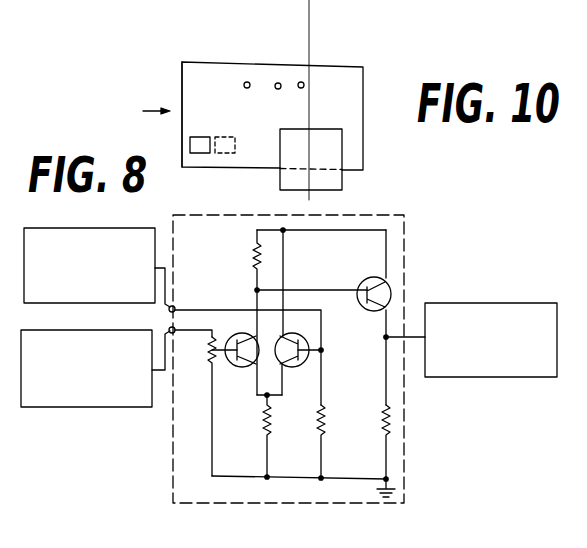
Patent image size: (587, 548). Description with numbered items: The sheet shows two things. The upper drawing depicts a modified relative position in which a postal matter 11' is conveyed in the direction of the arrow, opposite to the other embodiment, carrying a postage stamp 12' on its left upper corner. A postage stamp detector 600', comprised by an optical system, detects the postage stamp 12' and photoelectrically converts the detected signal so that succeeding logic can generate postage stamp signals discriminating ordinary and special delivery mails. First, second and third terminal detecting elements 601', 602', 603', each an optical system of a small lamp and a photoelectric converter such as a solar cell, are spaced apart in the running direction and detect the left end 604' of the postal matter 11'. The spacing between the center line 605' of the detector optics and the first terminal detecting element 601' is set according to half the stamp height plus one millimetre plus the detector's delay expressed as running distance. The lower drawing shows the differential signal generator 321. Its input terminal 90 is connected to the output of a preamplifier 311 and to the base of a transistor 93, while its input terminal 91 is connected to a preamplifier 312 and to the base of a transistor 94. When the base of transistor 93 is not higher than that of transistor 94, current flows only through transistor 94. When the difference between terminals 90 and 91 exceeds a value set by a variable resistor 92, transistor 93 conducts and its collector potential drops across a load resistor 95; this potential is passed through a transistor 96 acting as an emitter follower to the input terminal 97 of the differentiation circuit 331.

In FIG. 10, the postal matter 11' is at (296, 106).
In FIG. 10, the postage stamp 12' is at (212, 168).
In FIG. 10, the postage stamp detector 600' is at (348, 159).
In FIG. 10, the first terminal detecting element 601' is at (297, 49).
In FIG. 10, the second terminal detecting element 602' is at (281, 104).
In FIG. 10, the third terminal detecting element 603' is at (247, 58).
In FIG. 10, the left end 604' is at (158, 110).
In FIG. 10, the center line 605' is at (343, 100).
In FIG. 8, the preamplifier 312 is at (72, 228).
In FIG. 8, the preamplifier 311 is at (70, 330).
In FIG. 8, the differential signal generator 321 is at (392, 450).
In FIG. 8, the input terminal 91 is at (174, 306).
In FIG. 8, the input terminal 90 is at (182, 348).
In FIG. 8, the variable resistor 92 is at (211, 361).
In FIG. 8, the transistor 93 is at (236, 366).
In FIG. 8, the transistor 94 is at (301, 365).
In FIG. 8, the load resistor 95 is at (252, 262).
In FIG. 8, the transistor 96 is at (366, 281).
In FIG. 8, the input terminal 97 is at (408, 337).
In FIG. 8, the differentiation circuit 331 is at (479, 296).